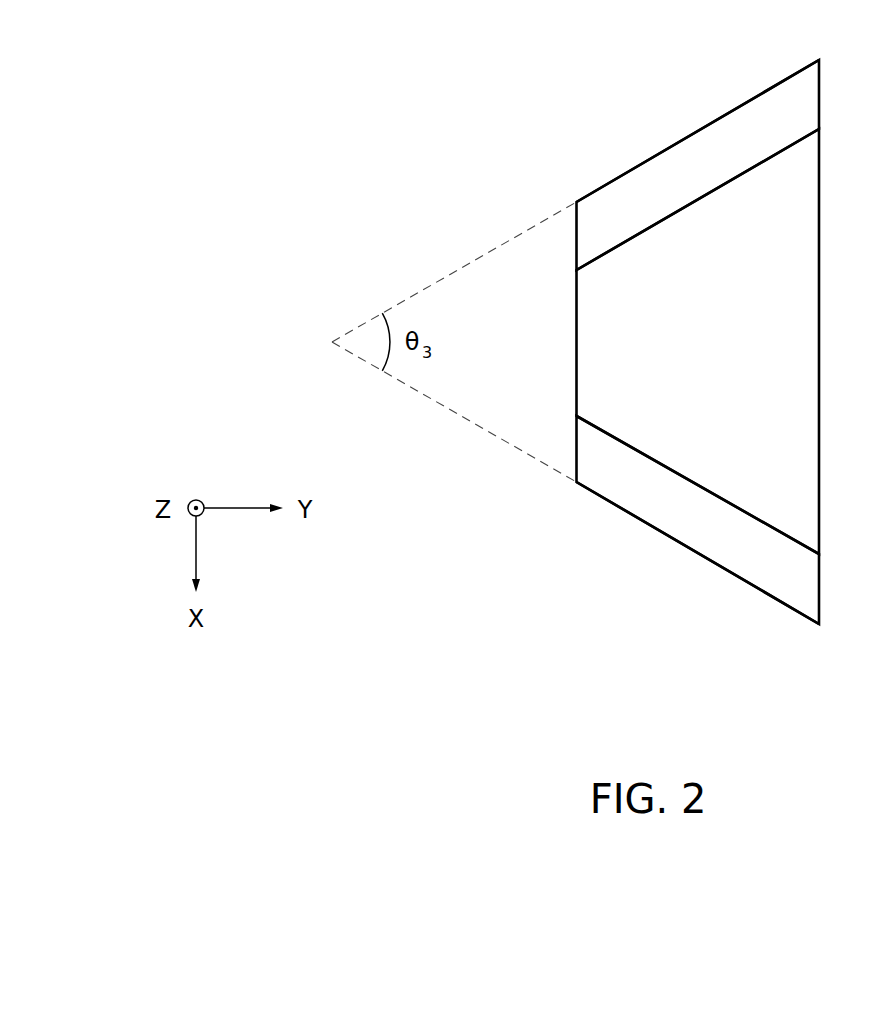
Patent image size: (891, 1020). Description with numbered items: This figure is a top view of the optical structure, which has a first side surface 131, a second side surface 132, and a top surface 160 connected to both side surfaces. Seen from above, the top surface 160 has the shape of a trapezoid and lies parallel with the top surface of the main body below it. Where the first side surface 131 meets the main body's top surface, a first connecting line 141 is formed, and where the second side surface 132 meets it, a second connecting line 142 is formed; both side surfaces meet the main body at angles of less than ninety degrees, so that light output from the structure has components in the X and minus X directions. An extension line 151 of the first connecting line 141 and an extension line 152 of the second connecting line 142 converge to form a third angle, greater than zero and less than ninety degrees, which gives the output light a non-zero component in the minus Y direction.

The first side surface 131 is at (698, 544).
The second side surface 132 is at (697, 163).
The first connecting line 141 is at (643, 524).
The second connecting line 142 is at (638, 165).
The extension line of the first connecting line 151 is at (472, 422).
The extension line of the second connecting line 152 is at (470, 263).
The top surface 160 is at (676, 358).